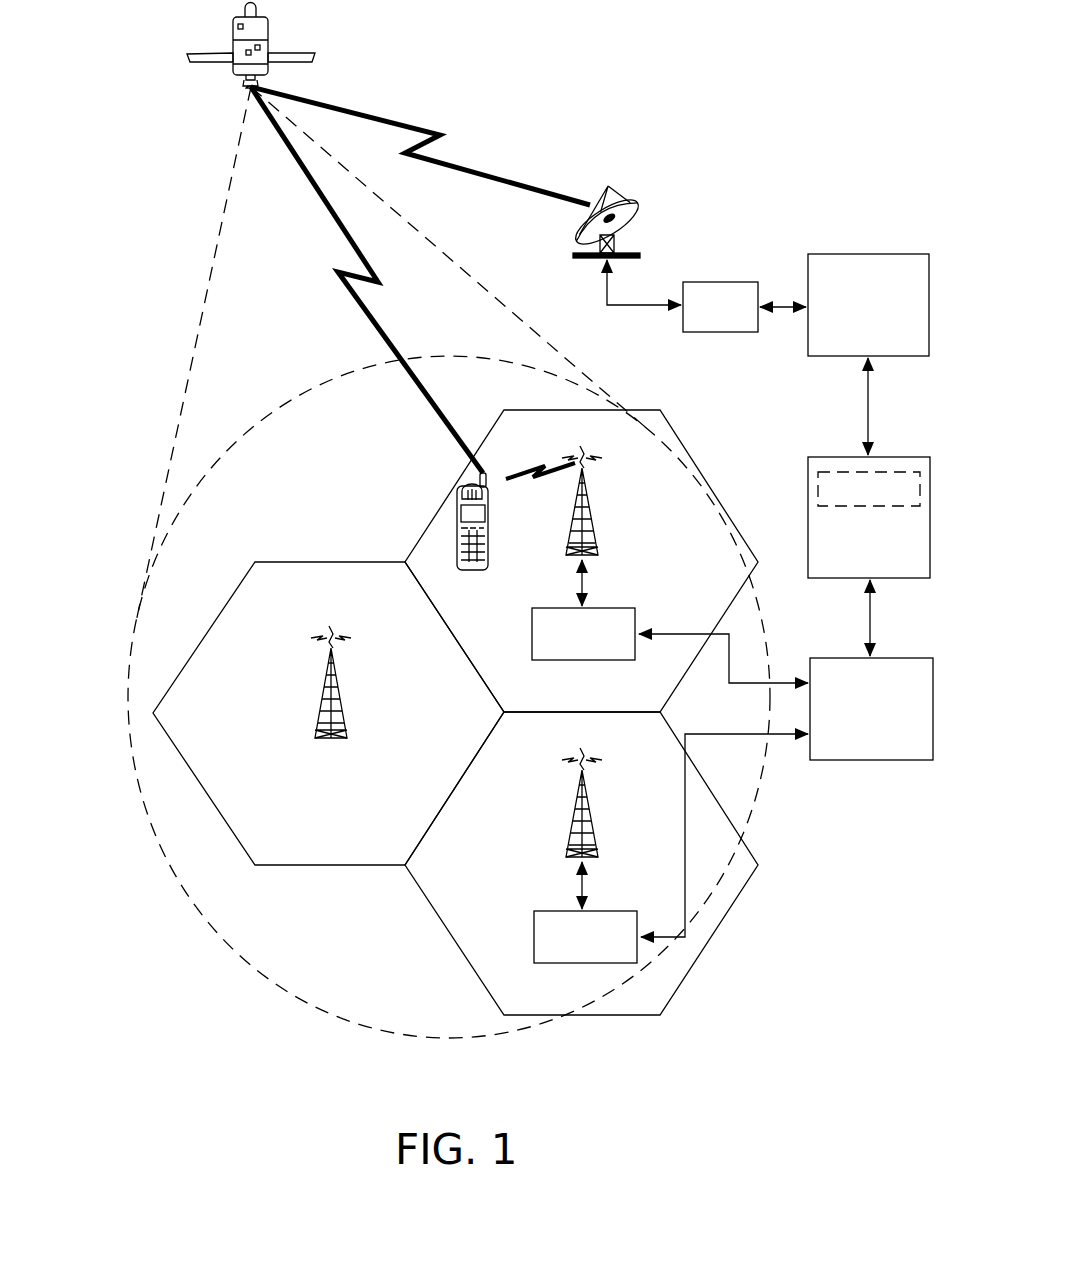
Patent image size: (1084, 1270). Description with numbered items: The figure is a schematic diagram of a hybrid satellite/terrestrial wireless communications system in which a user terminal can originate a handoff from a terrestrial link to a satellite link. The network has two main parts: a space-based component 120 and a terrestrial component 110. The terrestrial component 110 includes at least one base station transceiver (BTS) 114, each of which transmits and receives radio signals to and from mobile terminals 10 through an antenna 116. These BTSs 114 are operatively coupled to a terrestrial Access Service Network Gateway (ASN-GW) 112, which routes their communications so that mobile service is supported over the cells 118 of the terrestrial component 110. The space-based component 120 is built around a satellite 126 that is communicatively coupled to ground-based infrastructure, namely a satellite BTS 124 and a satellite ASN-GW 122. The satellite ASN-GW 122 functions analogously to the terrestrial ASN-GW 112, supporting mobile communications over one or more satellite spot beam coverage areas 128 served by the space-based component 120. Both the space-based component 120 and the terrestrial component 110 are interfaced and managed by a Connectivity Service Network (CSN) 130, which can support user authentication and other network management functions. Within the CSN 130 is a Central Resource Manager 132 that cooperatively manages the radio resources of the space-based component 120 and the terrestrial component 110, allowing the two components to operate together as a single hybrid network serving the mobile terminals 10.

The mobile terminal 10 is at (475, 571).
The terrestrial component 110 is at (836, 906).
The Access Service Network Gateway 112 is at (870, 761).
The base station transceiver 114 is at (585, 662).
The antenna 116 is at (593, 513).
The cell 118 is at (428, 515).
The space-based component 120 is at (741, 108).
The satellite ASN-GW 122 is at (868, 254).
The satellite BTS 124 is at (720, 333).
The satellite 126 is at (312, 57).
The satellite spot beam coverage area 128 is at (228, 947).
The Connectivity Service Network 130 is at (836, 517).
The Central Resource Manager 132 is at (865, 508).